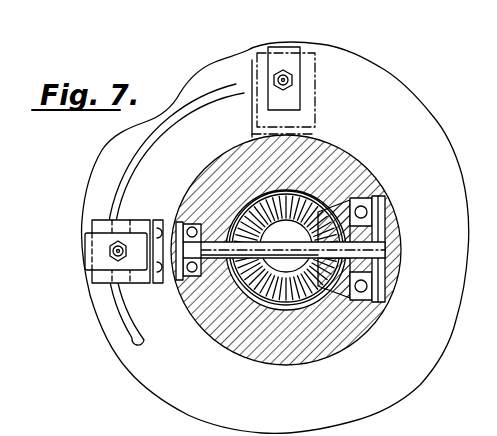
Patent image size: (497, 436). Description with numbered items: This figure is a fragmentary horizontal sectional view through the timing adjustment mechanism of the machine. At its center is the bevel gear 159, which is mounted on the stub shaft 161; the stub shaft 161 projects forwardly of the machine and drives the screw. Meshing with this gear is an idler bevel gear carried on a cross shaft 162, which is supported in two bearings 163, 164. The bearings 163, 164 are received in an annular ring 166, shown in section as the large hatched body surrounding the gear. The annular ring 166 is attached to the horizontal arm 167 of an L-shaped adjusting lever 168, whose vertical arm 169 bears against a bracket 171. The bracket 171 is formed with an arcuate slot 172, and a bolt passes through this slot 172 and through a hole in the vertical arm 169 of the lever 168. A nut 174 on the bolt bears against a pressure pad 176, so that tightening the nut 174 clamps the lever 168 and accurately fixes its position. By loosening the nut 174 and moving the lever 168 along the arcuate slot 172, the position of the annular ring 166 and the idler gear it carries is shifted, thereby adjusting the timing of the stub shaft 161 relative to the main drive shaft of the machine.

The bevel gear 159 is at (252, 196).
The stub shaft 161 is at (294, 240).
The cross shaft 162 is at (380, 248).
The bearing 163 is at (177, 284).
The bearing 164 is at (368, 280).
The annular ring 166 is at (343, 163).
The horizontal arm 167 is at (178, 222).
The L-shaped adjusting lever 168 is at (153, 280).
The vertical arm 169 is at (100, 278).
The bracket 171 is at (410, 105).
The arcuate slot 172 is at (270, 84).
The nut 174 is at (130, 237).
The pressure pad 176 is at (97, 252).